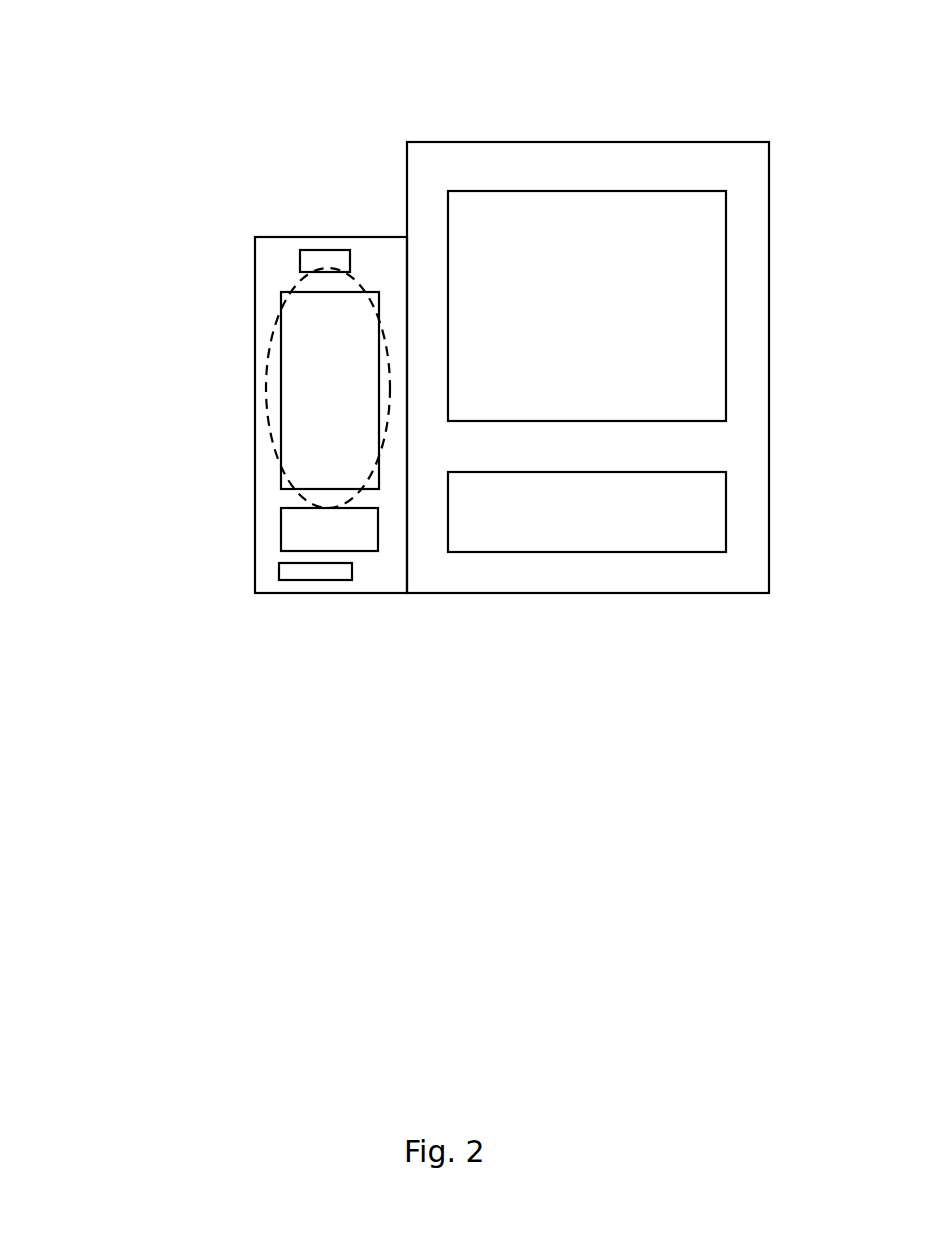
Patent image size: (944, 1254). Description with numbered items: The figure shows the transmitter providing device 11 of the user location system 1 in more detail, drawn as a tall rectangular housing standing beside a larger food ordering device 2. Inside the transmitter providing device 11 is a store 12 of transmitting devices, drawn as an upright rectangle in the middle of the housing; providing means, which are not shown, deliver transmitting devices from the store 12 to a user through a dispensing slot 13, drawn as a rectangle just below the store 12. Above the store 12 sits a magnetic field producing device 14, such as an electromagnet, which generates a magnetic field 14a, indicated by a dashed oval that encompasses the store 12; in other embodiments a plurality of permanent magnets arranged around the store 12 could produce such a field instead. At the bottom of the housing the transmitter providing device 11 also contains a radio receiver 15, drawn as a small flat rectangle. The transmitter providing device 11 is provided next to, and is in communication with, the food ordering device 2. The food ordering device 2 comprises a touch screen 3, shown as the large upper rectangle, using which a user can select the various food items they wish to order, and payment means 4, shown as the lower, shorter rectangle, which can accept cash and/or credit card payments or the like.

The spectroscopy system 1 is at (140, 53).
The food ordering device 2 is at (687, 142).
The touch screen 3 is at (726, 307).
The payment means 4 is at (726, 510).
The transmitter providing device 11 is at (255, 282).
The store 12 is at (281, 392).
The dispensing slot 13 is at (281, 532).
The magnetic field producing device 14 is at (299, 268).
The magnetic field 14a is at (362, 287).
The radio receiver 15 is at (279, 571).